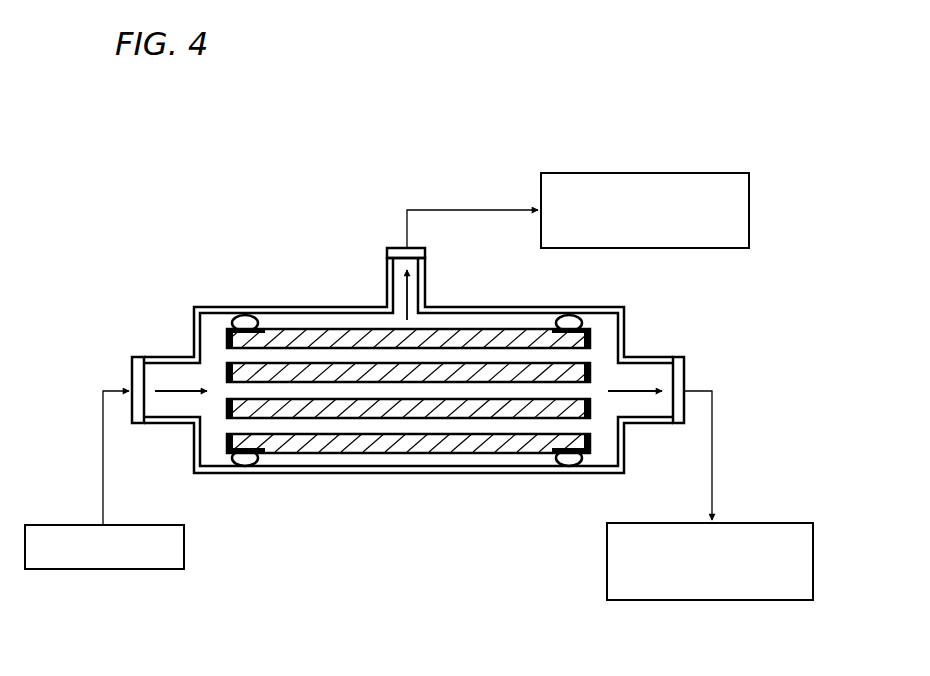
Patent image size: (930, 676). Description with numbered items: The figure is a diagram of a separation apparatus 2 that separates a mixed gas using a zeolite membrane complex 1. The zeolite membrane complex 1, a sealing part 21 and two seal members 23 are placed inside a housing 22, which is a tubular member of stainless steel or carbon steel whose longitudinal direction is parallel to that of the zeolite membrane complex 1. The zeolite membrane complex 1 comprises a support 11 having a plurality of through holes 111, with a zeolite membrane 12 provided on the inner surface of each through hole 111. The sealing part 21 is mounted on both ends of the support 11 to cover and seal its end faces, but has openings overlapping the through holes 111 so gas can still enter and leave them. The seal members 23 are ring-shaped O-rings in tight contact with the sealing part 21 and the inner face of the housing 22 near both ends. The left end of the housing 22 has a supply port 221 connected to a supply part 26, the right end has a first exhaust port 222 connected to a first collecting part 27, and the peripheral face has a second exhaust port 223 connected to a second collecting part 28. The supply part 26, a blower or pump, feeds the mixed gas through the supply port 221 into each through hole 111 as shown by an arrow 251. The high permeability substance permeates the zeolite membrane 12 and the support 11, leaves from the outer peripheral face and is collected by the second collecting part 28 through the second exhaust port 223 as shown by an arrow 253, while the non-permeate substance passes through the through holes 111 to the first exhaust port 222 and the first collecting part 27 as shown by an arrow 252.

The zeolite membrane complex 1 is at (219, 451).
The separation apparatus 2 is at (156, 193).
The support 11 is at (477, 449).
The zeolite membrane 12 is at (390, 384).
The through hole 111 is at (293, 393).
The sealing part 21 is at (230, 345).
The housing 22 is at (497, 305).
The seal member 23 is at (245, 318).
The supply port 221 is at (157, 364).
The first exhaust port 222 is at (657, 364).
The second exhaust port 223 is at (395, 270).
The arrow 251 is at (167, 393).
The arrow 252 is at (640, 392).
The arrow 253 is at (403, 296).
The supply part 26 is at (184, 546).
The first collecting part 27 is at (607, 560).
The second collecting part 28 is at (749, 210).